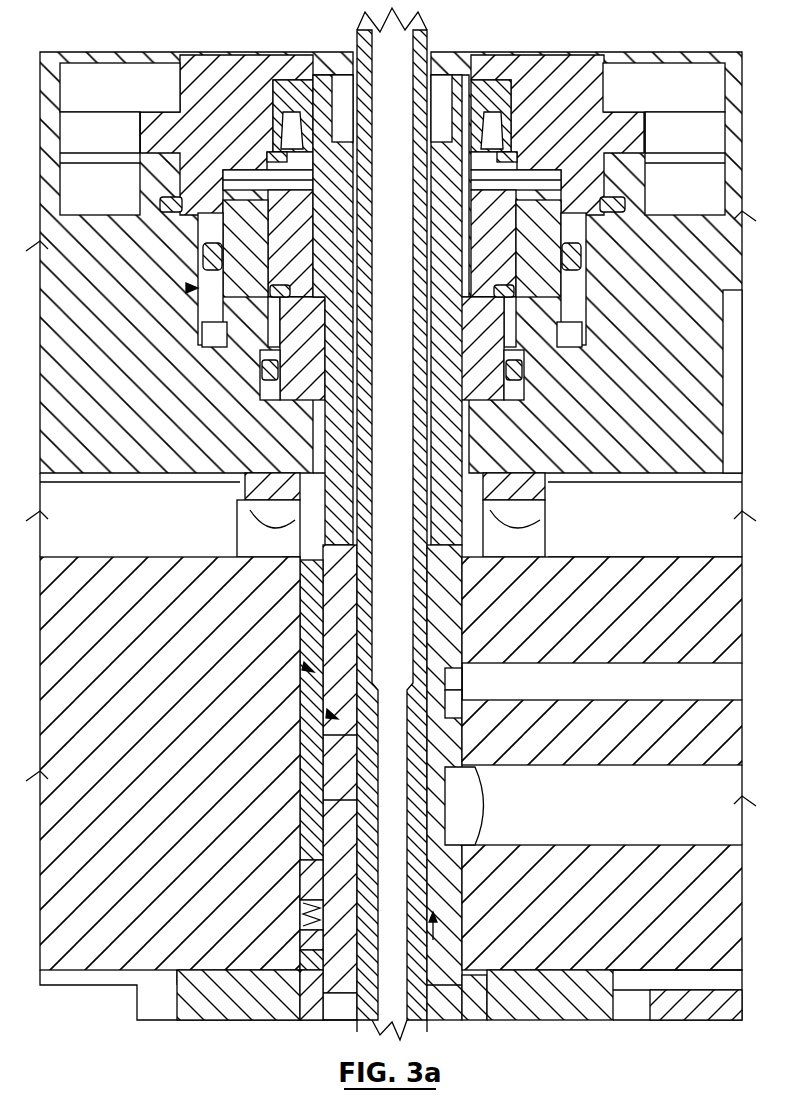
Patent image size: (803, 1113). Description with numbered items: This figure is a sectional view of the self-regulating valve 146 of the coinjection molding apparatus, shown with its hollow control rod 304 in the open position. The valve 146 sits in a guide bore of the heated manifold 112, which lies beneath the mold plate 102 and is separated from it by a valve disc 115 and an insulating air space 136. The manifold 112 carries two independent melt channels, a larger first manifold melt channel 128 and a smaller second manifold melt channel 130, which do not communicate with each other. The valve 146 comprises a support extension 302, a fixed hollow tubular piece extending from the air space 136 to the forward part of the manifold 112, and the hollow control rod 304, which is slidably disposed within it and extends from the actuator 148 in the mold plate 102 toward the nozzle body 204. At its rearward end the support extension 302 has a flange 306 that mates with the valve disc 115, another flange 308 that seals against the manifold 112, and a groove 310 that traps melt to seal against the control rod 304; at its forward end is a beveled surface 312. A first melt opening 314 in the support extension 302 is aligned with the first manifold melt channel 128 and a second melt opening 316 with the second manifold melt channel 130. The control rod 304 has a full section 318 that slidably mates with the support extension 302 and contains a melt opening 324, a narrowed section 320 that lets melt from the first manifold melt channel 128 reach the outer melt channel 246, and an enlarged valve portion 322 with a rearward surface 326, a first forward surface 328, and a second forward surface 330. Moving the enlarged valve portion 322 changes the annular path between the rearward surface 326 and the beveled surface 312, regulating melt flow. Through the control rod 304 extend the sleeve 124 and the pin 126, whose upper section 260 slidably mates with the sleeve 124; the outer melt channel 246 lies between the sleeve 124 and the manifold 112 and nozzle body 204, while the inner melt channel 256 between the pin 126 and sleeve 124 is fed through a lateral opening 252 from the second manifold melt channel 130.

The mold plate 102 is at (72, 388).
The manifold 112 is at (104, 768).
The valve disc 115 is at (245, 520).
The sleeve 124 is at (352, 610).
The pin 126 is at (340, 580).
The first manifold melt channel 128 is at (614, 814).
The second manifold melt channel 130 is at (614, 693).
The insulating air space 136 is at (70, 529).
The valve 146 is at (204, 681).
The actuator 148 is at (190, 289).
The nozzle body 204 is at (535, 1006).
The outer melt channel 246 is at (480, 928).
The lateral opening 252 is at (440, 590).
The inner melt channel 256 is at (470, 985).
The upper section 260 is at (428, 566).
The support extension 302 is at (308, 668).
The hollow control rod 304 is at (332, 714).
The flange 306 is at (272, 527).
The flange 308 is at (285, 562).
The groove 310 is at (520, 530).
The beveled surface 312 is at (330, 868).
The first melt opening 314 is at (470, 790).
The second melt opening 316 is at (462, 688).
The full section 318 is at (345, 735).
The narrowed section 320 is at (345, 800).
The enlarged valve portion 322 is at (345, 915).
The melt opening 324 is at (455, 650).
The rearward surface 326 is at (330, 888).
The first forward surface 328 is at (350, 940).
The second forward surface 330 is at (350, 955).